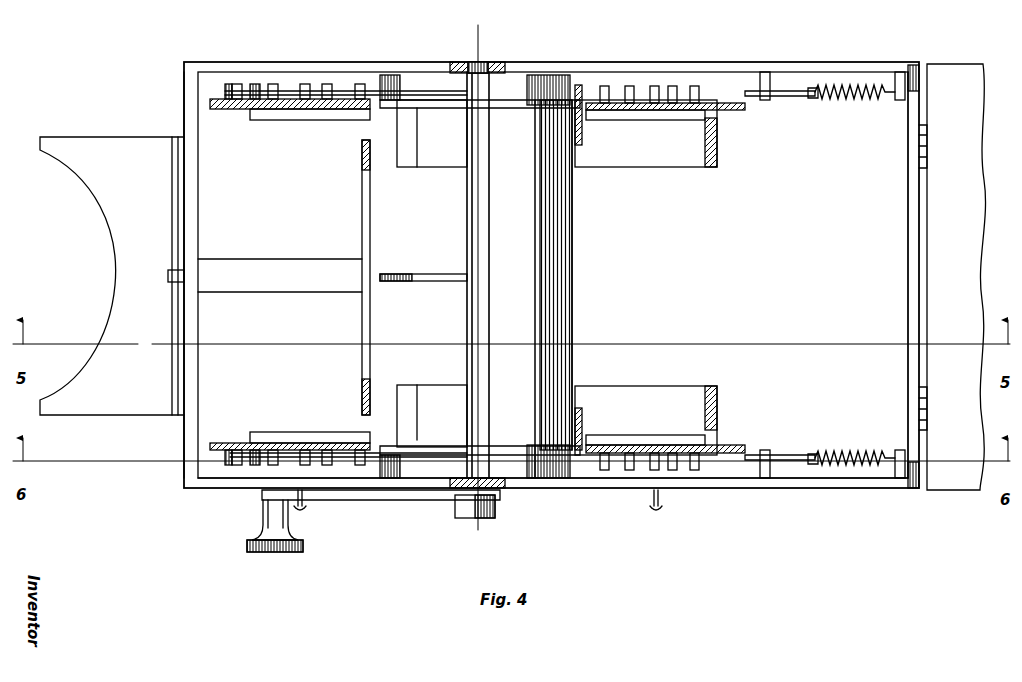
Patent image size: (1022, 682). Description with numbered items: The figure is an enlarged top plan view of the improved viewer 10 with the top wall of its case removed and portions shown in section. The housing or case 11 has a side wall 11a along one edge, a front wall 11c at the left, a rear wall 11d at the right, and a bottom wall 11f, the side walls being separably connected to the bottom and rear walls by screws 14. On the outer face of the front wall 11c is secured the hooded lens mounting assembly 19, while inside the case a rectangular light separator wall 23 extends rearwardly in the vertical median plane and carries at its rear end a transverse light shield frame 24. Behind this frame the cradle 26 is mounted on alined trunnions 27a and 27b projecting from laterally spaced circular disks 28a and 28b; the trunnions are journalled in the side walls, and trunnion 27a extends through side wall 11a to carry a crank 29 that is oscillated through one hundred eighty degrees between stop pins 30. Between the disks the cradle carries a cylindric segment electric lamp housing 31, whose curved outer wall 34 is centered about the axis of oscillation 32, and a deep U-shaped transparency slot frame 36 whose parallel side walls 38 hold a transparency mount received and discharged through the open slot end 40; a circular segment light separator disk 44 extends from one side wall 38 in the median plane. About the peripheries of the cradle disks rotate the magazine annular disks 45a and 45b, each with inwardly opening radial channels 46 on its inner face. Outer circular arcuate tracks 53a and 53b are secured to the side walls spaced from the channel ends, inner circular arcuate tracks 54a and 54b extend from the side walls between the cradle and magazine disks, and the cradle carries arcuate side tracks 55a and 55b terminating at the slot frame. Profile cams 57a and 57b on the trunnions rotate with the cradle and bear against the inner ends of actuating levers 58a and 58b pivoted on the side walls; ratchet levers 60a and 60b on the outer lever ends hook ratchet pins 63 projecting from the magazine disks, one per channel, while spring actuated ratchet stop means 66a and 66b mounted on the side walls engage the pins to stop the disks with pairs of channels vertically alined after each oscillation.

The improved viewer 10 is at (826, 488).
The housing or case 11 is at (927, 302).
The side wall 11a is at (748, 488).
The front wall 11c is at (198, 184).
The rear wall 11d is at (908, 230).
The bottom wall 11f is at (785, 222).
The screws 14 is at (908, 66).
The hooded lens mounting assembly 19 is at (98, 137).
The light separator wall 23 is at (268, 292).
The transverse light shield frame 24 is at (362, 358).
The cradle 26 is at (462, 206).
The trunnion 27a is at (500, 500).
The trunnion 27b is at (485, 62).
The circular disk 28a is at (505, 446).
The circular disk 28b is at (512, 110).
The crank 29 is at (368, 500).
The stop pins 30 is at (306, 508).
The electric lamp housing 31 is at (574, 226).
The axis of oscillation 32 is at (482, 268).
The cylindric segment outer wall 34 is at (566, 312).
The transparency slot frame 36 is at (467, 360).
The side walls 38 is at (467, 306).
The open slot end 40 is at (484, 362).
The light separator disk 44 is at (406, 274).
The magazine annular disk 45a is at (730, 446).
The magazine annular disk 45b is at (740, 110).
The radial channels 46 is at (288, 116).
The outer circular arcuate track 53a is at (680, 386).
The outer circular arcuate track 53b is at (680, 167).
The inner circular arcuate track 54a is at (585, 436).
The inner circular arcuate track 54b is at (584, 128).
The circular arcuate side track 55a is at (420, 436).
The circular arcuate side track 55b is at (420, 114).
The profile cam 57a is at (520, 458).
The profile cam 57b is at (520, 92).
The actuating lever 58a is at (433, 478).
The actuating lever 58b is at (368, 91).
The ratchet lever 60a is at (258, 465).
The ratchet lever 60b is at (255, 84).
The ratchet pins 63 is at (228, 90).
The spring actuated ratchet stop means 66a is at (818, 456).
The spring actuated ratchet stop means 66b is at (822, 100).